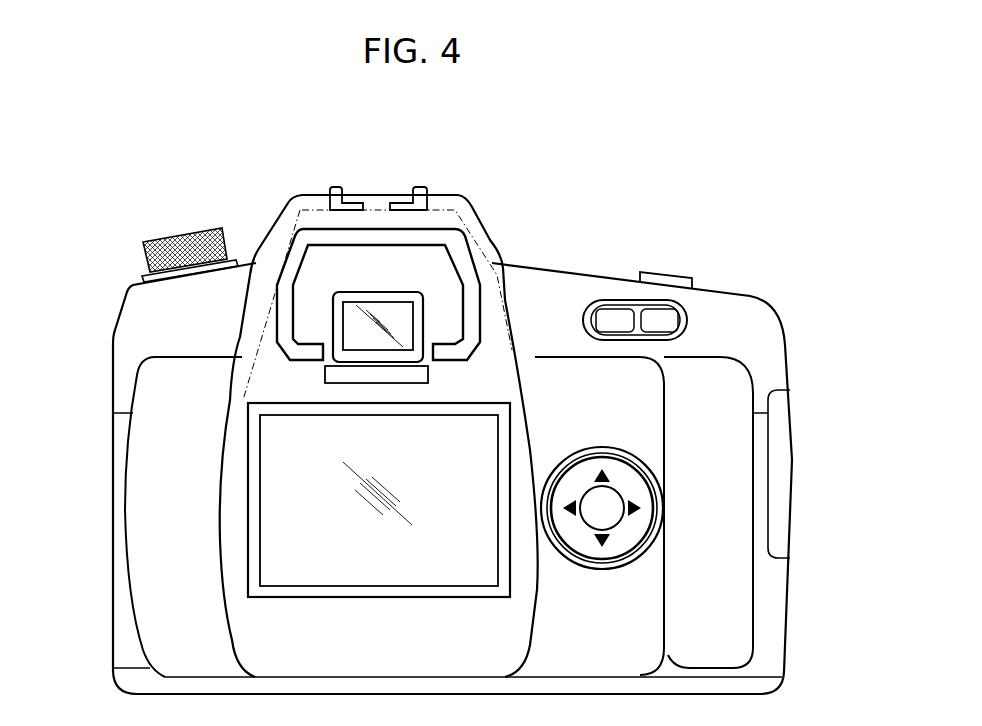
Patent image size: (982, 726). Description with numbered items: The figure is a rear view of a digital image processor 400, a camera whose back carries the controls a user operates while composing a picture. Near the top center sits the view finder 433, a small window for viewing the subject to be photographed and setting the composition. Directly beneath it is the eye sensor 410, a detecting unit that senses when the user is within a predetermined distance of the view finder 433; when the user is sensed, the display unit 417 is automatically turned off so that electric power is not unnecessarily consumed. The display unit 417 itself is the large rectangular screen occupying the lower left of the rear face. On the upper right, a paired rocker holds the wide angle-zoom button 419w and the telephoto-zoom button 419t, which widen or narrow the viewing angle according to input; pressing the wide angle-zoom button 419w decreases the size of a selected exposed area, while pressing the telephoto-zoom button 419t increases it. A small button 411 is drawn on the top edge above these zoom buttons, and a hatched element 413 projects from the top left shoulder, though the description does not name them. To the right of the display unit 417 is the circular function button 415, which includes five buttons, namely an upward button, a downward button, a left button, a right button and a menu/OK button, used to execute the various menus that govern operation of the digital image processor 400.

The digital image processor 400 is at (775, 295).
The eye sensor 410 is at (343, 372).
The shutter release button 411 is at (668, 273).
The flash 413 is at (182, 237).
The function button 415 is at (660, 510).
The display unit 417 is at (285, 505).
The wide angle-zoom button 419w is at (612, 306).
The telephoto-zoom button 419t is at (655, 310).
The view finder 433 is at (398, 315).